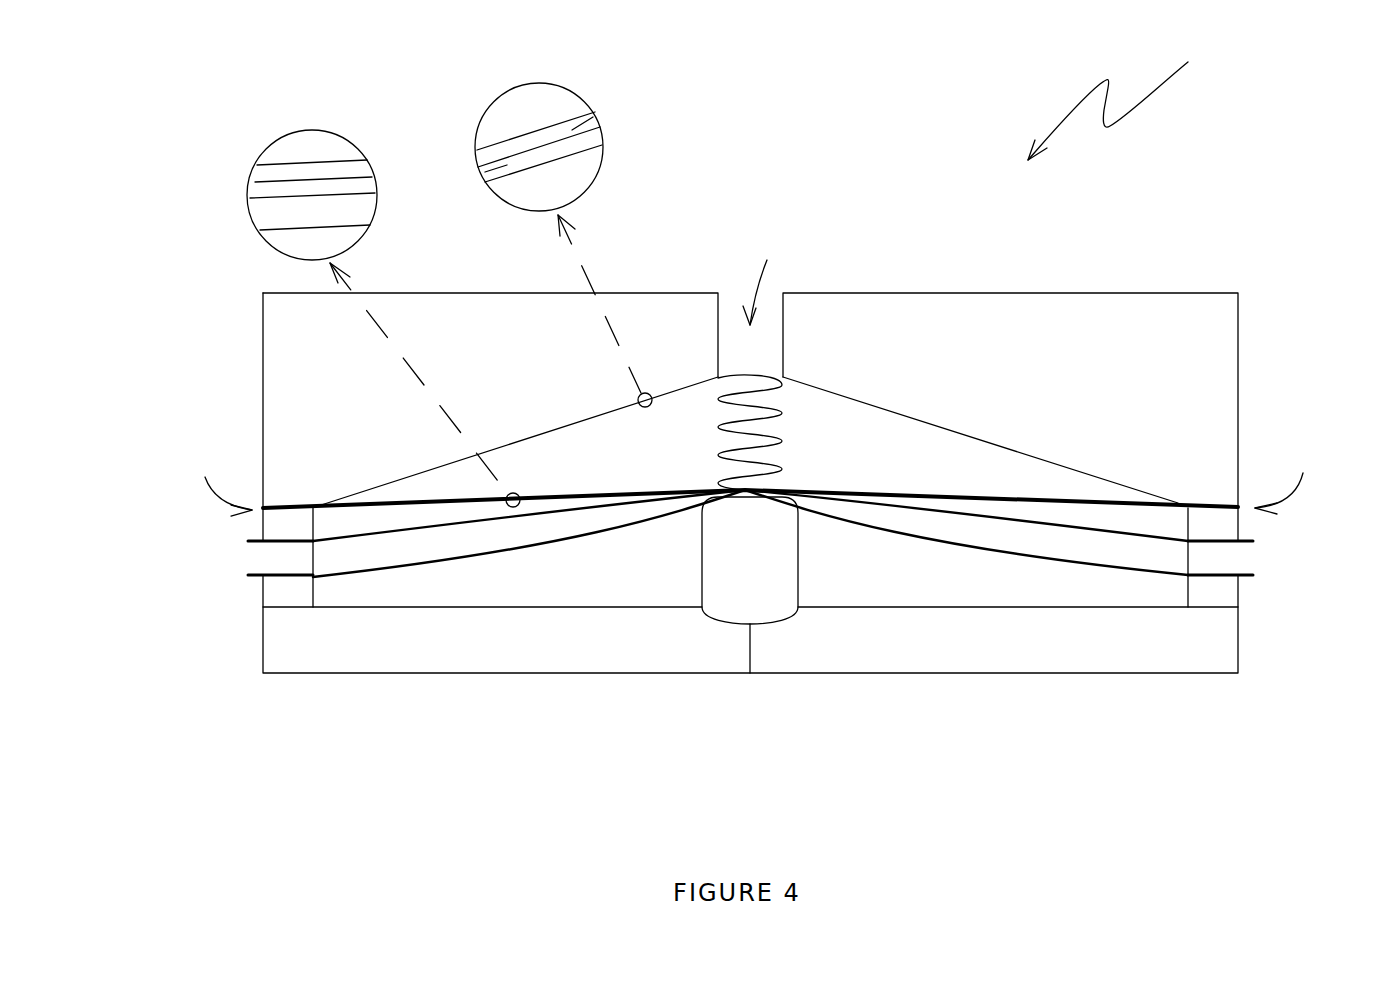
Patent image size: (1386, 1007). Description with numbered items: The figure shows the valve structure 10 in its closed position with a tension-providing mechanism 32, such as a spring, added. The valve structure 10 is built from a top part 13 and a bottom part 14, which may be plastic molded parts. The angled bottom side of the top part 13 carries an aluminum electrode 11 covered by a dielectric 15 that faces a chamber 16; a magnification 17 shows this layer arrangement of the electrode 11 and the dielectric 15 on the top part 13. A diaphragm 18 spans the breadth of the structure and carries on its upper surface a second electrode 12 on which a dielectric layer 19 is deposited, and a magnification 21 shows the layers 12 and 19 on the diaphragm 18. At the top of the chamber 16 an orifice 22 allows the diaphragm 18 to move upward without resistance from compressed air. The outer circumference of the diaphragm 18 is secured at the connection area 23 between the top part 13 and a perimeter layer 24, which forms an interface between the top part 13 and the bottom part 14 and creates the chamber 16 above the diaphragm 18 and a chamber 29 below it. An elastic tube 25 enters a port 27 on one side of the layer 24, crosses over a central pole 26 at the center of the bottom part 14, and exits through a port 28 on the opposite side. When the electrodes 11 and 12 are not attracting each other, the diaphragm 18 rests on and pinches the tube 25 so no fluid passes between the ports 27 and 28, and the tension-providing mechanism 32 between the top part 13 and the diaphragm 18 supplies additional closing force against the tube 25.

The valve structure 10 is at (1124, 92).
The electrode 11 is at (513, 462).
The electrode 12 is at (638, 470).
The top part 13 is at (288, 377).
The bottom part 14 is at (303, 657).
The dielectric 15 is at (485, 175).
The chamber 16 is at (853, 446).
The magnification 17 is at (573, 248).
The diaphragm 18 is at (1013, 497).
The dielectric layer 19 is at (263, 170).
The magnification 21 is at (333, 264).
The orifice 22 is at (764, 274).
The connection area 23 is at (752, 476).
The perimeter layer 24 is at (287, 525).
The tube 25 is at (443, 557).
The central pole 26 is at (785, 557).
The port 27 is at (267, 557).
The port 28 is at (1238, 555).
The chamber 29 is at (658, 563).
The tension-providing mechanism 32 is at (790, 412).